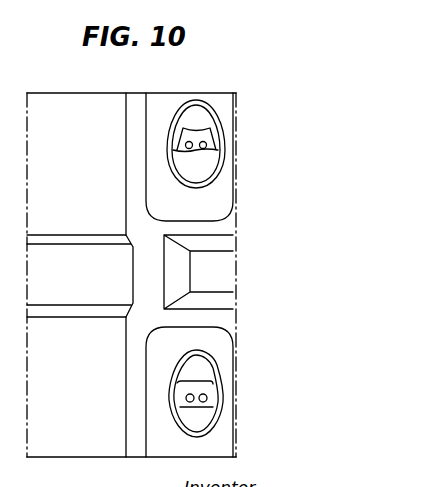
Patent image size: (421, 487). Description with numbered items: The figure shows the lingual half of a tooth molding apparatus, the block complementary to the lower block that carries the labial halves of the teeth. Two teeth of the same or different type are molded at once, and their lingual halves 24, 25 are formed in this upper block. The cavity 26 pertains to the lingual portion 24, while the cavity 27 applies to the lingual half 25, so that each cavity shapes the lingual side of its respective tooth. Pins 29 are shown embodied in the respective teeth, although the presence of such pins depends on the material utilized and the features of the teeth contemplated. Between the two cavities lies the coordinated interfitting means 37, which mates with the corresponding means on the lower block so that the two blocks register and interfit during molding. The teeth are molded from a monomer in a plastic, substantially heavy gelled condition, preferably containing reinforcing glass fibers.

The lingual half of tooth 24 is at (177, 421).
The lingual half of tooth 25 is at (186, 108).
The cavity 26 is at (188, 370).
The cavity 27 is at (200, 118).
The pins 29 is at (170, 137).
The coordinated interfitting means 37 is at (212, 273).